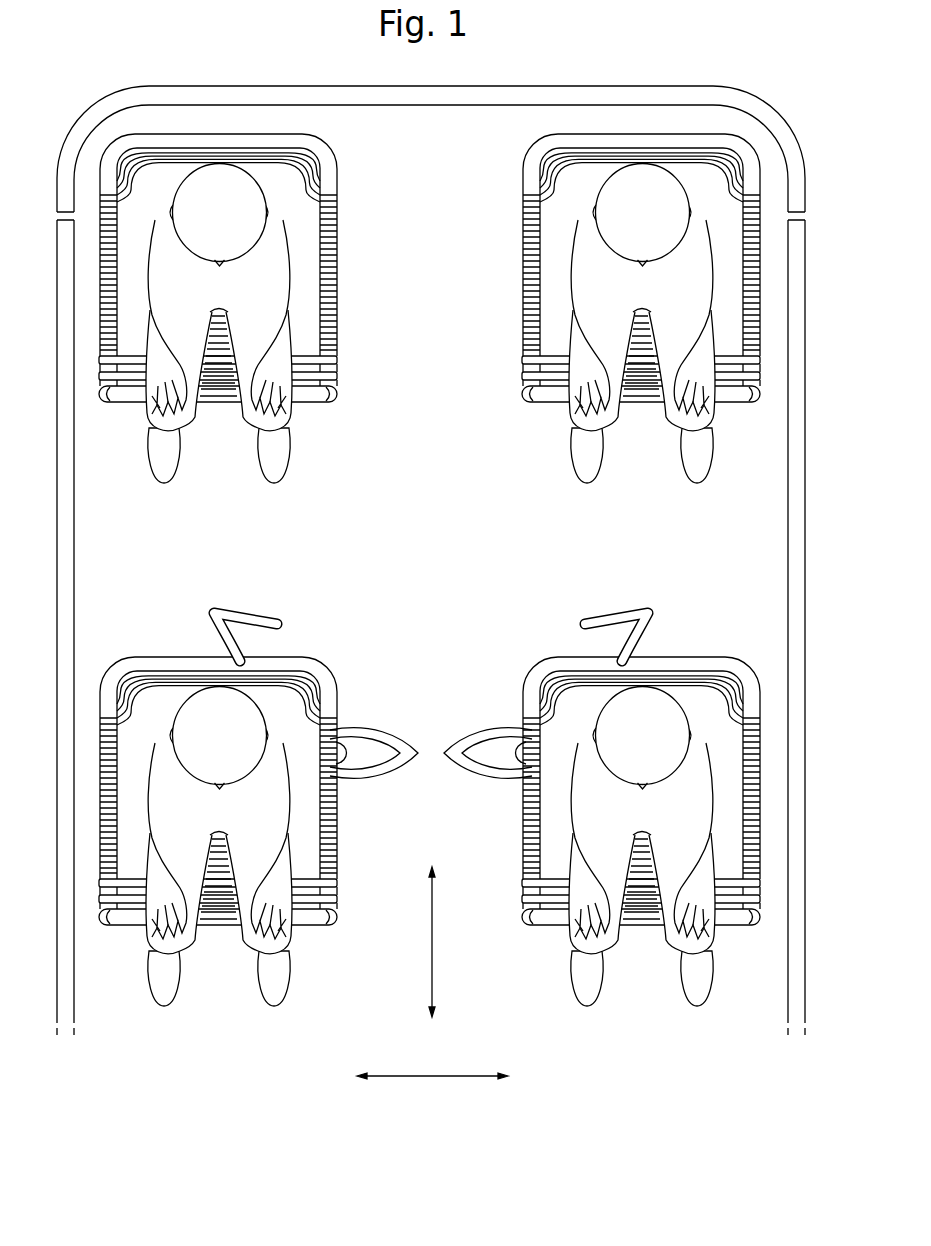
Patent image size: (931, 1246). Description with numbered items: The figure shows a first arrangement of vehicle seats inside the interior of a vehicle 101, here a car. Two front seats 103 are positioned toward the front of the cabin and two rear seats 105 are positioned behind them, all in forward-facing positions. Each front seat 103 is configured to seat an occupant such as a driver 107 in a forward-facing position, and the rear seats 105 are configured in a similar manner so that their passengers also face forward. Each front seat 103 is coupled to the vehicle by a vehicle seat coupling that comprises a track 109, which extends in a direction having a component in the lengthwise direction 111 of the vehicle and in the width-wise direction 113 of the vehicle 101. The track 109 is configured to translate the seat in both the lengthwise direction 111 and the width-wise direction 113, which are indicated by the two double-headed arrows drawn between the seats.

The vehicle 101 is at (445, 536).
The front seats 103 is at (341, 696).
The rear seats 105 is at (340, 184).
The driver 107 is at (298, 288).
The track 109 is at (372, 780).
The lengthwise direction 111 is at (432, 951).
The width-wise direction 113 is at (455, 1076).